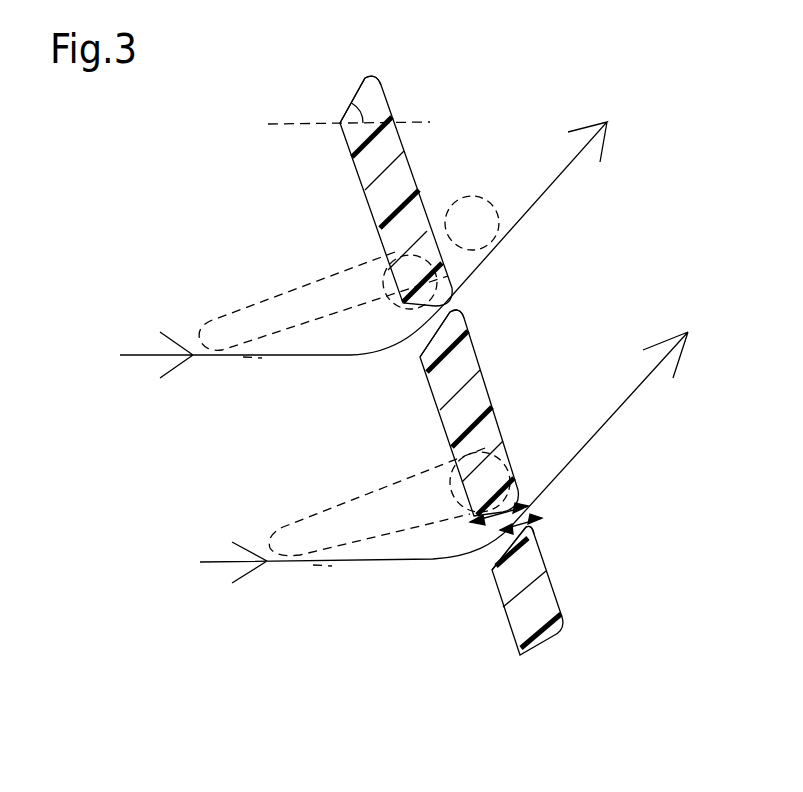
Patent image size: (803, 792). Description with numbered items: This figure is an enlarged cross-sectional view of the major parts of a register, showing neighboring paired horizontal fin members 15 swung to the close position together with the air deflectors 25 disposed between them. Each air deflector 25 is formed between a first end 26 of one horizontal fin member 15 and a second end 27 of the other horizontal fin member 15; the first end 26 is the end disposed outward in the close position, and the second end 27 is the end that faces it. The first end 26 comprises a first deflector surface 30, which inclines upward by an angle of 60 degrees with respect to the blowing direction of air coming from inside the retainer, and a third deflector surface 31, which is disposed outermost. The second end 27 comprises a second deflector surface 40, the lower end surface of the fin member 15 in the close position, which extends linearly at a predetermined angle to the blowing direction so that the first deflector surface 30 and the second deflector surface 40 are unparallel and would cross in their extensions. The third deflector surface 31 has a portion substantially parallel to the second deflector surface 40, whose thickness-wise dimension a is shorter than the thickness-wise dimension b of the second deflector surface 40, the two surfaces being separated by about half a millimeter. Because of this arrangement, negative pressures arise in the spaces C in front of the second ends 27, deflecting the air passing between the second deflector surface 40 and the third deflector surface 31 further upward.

The horizontal fin member 15 is at (382, 148).
The air deflector 25 is at (525, 267).
The first end 26 is at (375, 88).
The second end 27 is at (400, 270).
The first deflector surface 30 is at (348, 105).
The third deflector surface 31 is at (366, 78).
The second deflector surface 40 is at (440, 298).
The space C is at (488, 197).
The thickness-wise dimension a is at (530, 536).
The thickness-wise dimension b is at (478, 503).
The angle of 60 degrees 60 is at (363, 112).